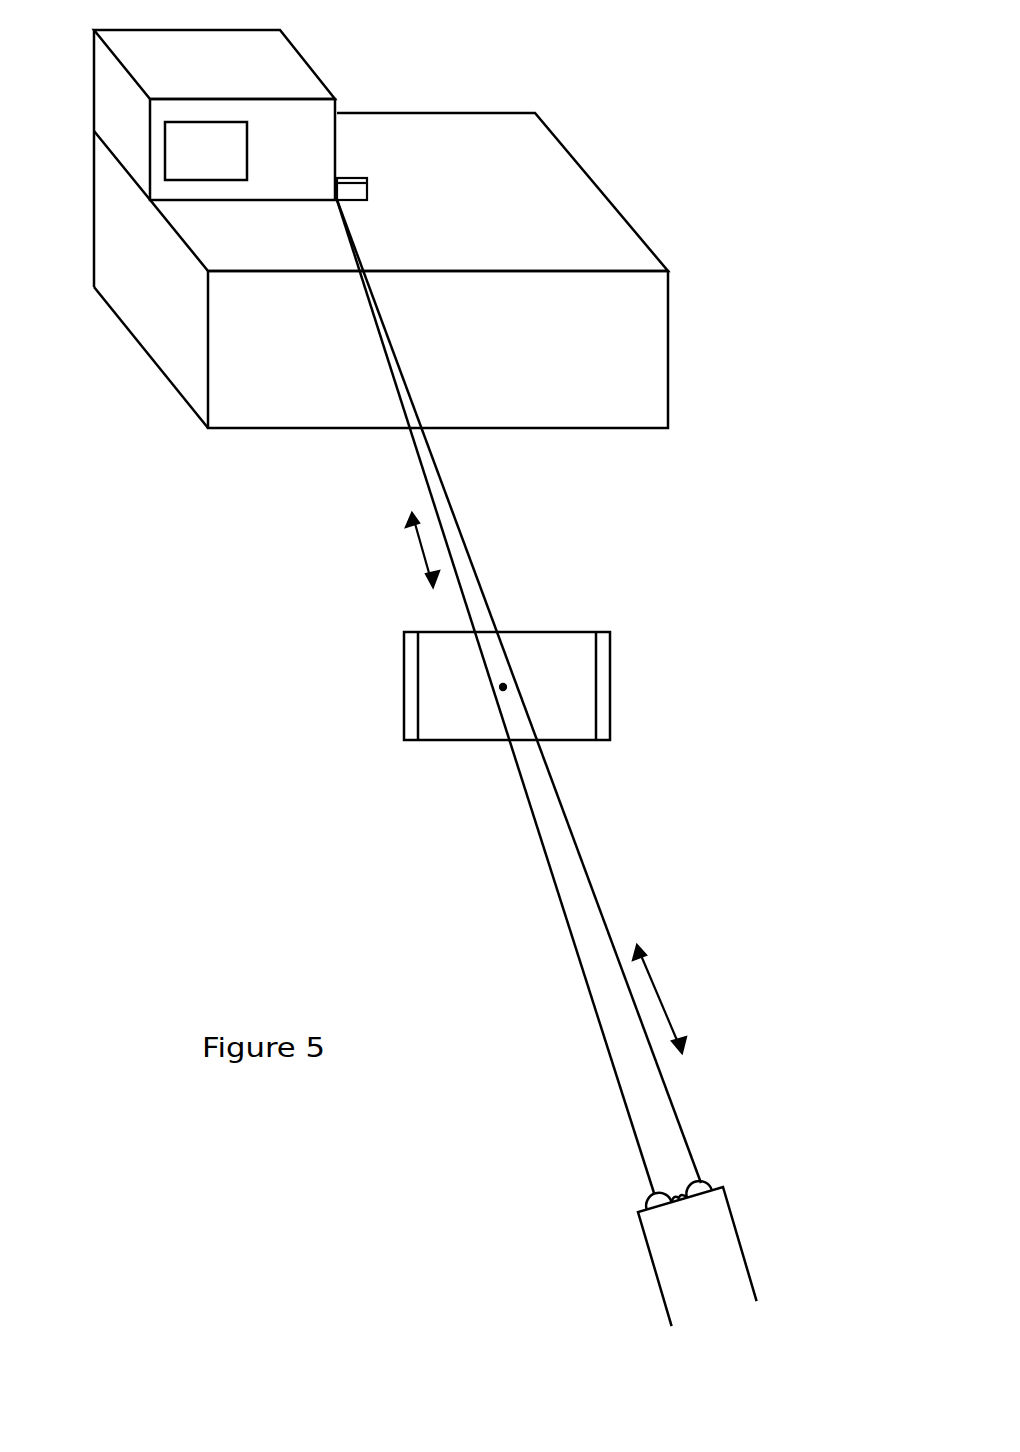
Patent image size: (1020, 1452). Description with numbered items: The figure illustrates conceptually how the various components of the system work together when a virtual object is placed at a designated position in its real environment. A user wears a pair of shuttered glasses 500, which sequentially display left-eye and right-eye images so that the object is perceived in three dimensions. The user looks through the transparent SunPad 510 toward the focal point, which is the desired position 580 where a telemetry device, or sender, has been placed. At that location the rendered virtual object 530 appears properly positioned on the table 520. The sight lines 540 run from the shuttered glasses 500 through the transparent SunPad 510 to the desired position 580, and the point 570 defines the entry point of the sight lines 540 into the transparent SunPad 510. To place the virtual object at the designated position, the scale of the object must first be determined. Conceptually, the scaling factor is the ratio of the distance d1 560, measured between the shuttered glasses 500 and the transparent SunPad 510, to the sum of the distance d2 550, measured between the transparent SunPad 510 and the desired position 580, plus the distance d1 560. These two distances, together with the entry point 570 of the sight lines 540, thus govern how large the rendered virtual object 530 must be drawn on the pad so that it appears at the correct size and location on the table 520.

The shuttered glasses 500 is at (730, 1203).
The transparent SunPad 510 is at (609, 662).
The table 520 is at (668, 314).
The rendered virtual object 530 is at (105, 87).
The sight lines 540 is at (470, 556).
The distance d2 550 is at (423, 550).
The distance d1 560 is at (660, 998).
The entry point 570 is at (503, 687).
The desired position (sender) 580 is at (367, 188).